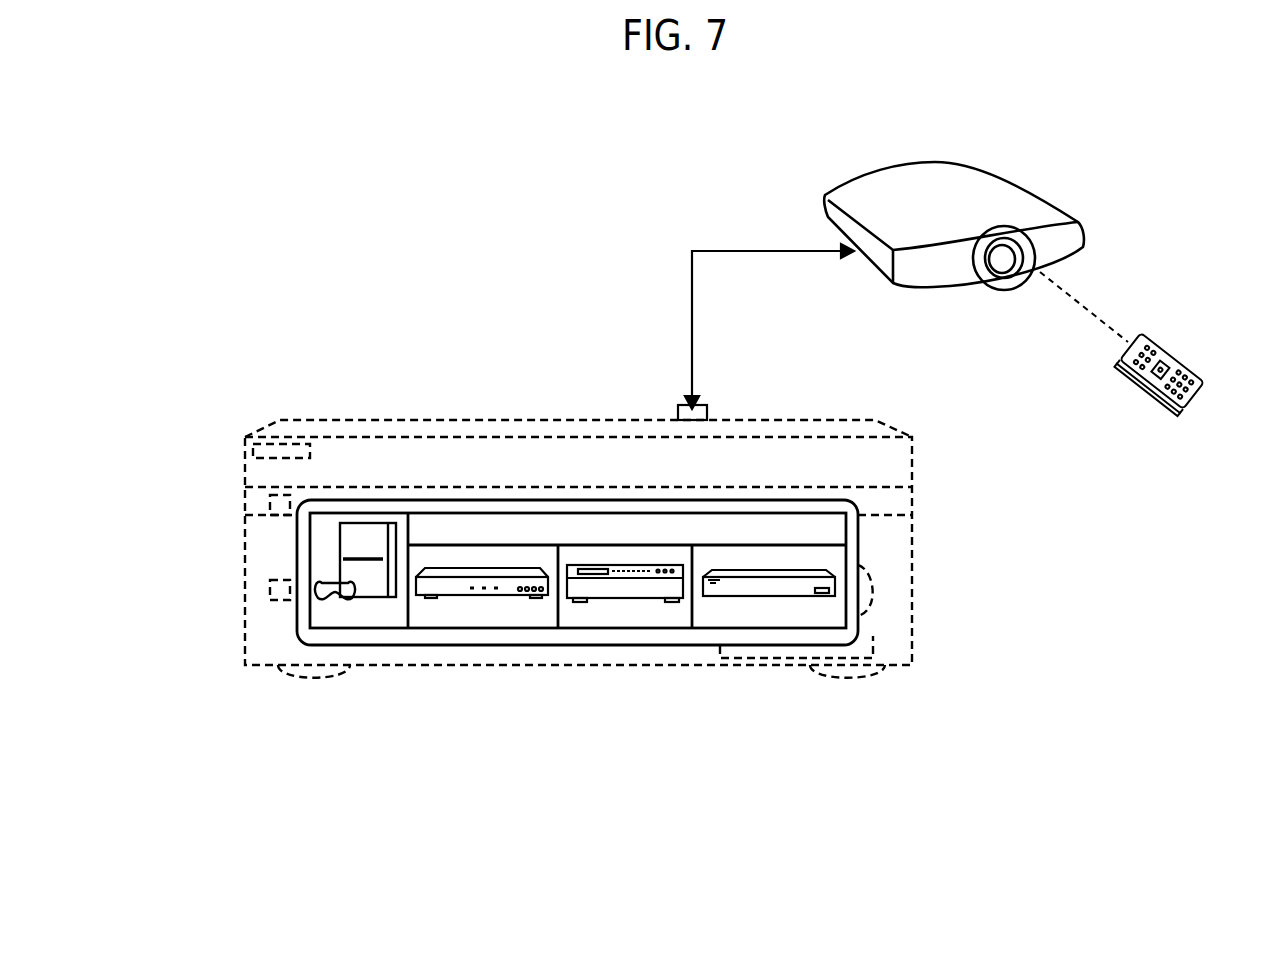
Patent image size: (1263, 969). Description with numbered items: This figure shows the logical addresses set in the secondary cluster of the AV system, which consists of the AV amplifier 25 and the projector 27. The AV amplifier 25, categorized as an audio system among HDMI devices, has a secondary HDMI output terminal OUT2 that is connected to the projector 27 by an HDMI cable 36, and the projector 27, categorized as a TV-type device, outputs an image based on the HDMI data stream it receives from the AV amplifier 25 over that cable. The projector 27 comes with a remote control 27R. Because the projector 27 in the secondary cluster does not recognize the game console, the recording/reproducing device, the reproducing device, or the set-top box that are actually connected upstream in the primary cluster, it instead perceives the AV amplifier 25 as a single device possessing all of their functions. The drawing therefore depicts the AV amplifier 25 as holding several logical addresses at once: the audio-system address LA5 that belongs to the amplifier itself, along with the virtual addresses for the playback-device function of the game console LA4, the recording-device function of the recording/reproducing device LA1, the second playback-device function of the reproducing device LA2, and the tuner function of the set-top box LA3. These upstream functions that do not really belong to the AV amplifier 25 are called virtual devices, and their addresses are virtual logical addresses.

The AV amplifier 25 is at (575, 420).
The projector 27 is at (1028, 215).
The remote control 27R is at (1178, 362).
The HDMI cable 36 is at (768, 256).
The HDMI output terminal OUT2 is at (708, 410).
The logical address 1 (recording device) LA1 is at (383, 697).
The logical address 8 (playback device 2) LA2 is at (575, 700).
The logical address 3 (tuner) LA3 is at (788, 698).
The logical address 4 (playback device 1) LA4 is at (340, 546).
The logical address 5 (audio system) LA5 is at (592, 532).